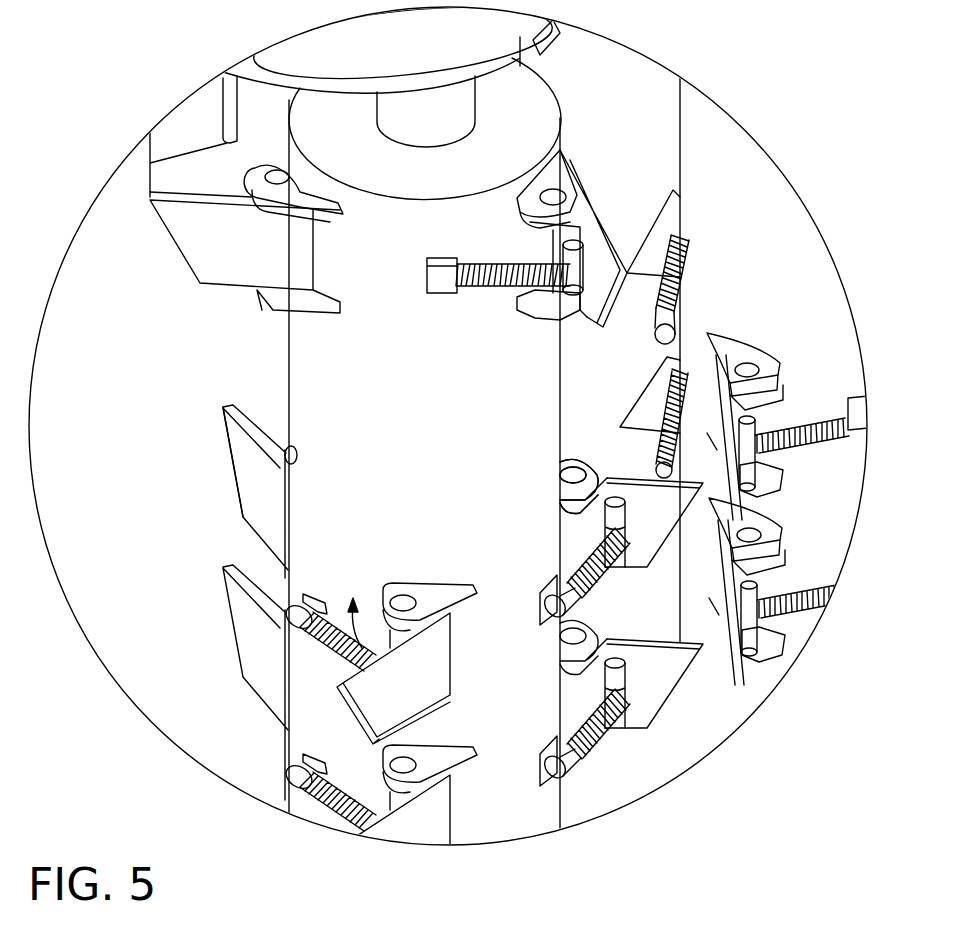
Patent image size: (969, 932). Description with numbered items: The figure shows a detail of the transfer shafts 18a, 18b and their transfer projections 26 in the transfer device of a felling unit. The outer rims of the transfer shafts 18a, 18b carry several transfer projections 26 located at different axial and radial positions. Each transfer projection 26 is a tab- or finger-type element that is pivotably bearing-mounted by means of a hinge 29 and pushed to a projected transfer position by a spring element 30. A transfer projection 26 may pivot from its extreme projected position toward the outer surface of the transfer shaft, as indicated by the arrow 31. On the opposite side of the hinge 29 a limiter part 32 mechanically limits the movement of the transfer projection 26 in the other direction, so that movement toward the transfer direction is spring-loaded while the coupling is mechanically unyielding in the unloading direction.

The transfer shaft 18a is at (323, 358).
The transfer shaft 18b is at (750, 220).
The transfer projection 26 is at (247, 473).
The hinge 29 is at (560, 473).
The spring element 30 is at (600, 733).
The arrow 31 is at (345, 620).
The limiter part 32 is at (452, 643).